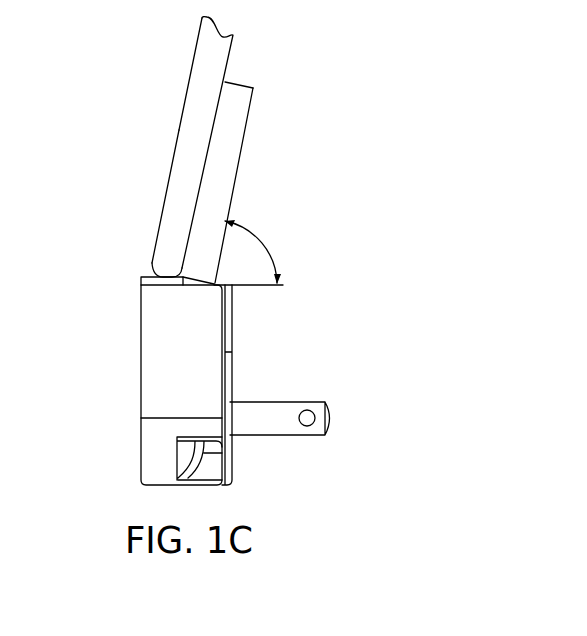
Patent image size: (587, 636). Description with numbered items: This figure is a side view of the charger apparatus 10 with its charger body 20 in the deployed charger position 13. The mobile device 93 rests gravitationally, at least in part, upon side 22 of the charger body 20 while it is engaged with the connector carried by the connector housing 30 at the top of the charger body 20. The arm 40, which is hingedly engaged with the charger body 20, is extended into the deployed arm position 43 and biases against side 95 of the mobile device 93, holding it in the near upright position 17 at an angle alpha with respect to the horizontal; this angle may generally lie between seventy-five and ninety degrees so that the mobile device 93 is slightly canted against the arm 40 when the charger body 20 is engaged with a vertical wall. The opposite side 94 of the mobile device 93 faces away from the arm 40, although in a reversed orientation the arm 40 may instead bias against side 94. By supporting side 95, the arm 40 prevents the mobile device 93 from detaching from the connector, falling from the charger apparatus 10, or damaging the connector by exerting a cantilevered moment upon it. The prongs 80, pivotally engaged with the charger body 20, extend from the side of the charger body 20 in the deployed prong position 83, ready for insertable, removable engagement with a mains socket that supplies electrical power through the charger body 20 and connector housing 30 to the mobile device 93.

The charger apparatus 10 is at (259, 257).
The deployed charger position 13 is at (259, 308).
The near upright position 17 is at (240, 150).
The charger body 20 is at (155, 375).
The side of charger body 22 is at (147, 275).
The connector housing 30 is at (165, 286).
The arm 40 is at (222, 188).
The deployed arm position 43 is at (232, 130).
The prongs 80 is at (299, 402).
The deployed prong position 83 is at (275, 428).
The mobile device 93 is at (175, 177).
The side of mobile device 94 is at (189, 80).
The side of mobile device 95 is at (228, 58).